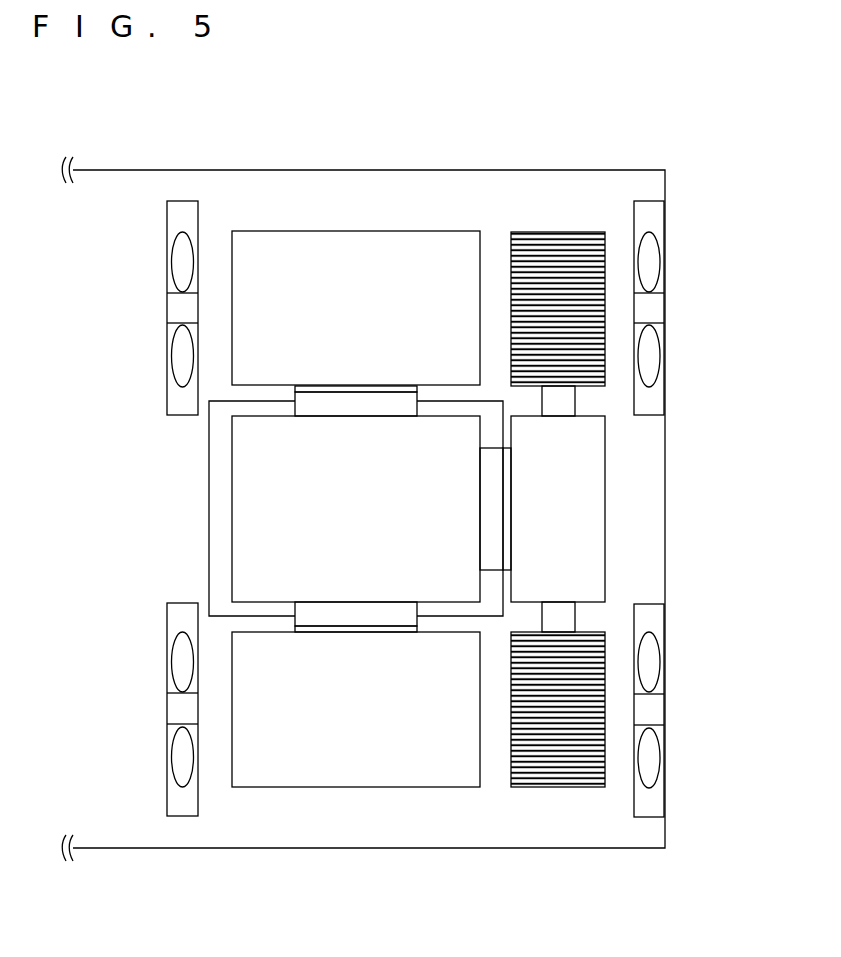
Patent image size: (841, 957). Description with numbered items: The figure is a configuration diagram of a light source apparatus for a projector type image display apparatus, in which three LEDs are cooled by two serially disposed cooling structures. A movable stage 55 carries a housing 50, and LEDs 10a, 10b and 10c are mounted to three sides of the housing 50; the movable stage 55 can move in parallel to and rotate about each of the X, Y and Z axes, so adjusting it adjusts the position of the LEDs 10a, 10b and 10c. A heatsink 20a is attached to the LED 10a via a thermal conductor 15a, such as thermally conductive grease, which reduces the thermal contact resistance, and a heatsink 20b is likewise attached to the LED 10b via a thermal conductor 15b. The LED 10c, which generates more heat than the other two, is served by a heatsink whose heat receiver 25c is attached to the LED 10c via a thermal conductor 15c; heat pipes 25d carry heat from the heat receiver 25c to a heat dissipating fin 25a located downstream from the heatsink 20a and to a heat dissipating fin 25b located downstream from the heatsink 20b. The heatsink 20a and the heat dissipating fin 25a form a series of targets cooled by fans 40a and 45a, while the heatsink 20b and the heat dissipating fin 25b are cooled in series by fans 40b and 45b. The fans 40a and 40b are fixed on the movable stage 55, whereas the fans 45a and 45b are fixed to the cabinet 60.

The LED 10a is at (397, 403).
The LED 10b is at (400, 618).
The LED 10c is at (491, 469).
The thermal conductor 15a is at (338, 386).
The thermal conductor 15b is at (337, 632).
The thermal conductor 15c is at (509, 502).
The heatsink 20a is at (357, 231).
The heatsink 20b is at (375, 787).
The heat dissipating fin 25a is at (557, 232).
The heat dissipating fin 25b is at (557, 787).
The heat receiver 25c is at (605, 542).
The heat pipes 25d is at (575, 403).
The fan 40a is at (167, 313).
The fan 40b is at (167, 714).
The fan 45a is at (649, 201).
The fan 45b is at (648, 817).
The housing 50 is at (232, 547).
The movable stage 55 is at (209, 511).
The cabinet 60 is at (483, 849).